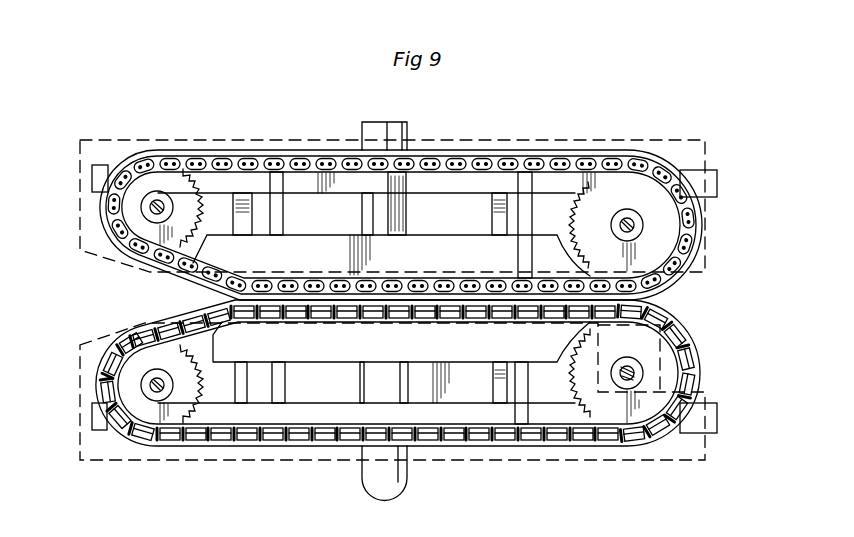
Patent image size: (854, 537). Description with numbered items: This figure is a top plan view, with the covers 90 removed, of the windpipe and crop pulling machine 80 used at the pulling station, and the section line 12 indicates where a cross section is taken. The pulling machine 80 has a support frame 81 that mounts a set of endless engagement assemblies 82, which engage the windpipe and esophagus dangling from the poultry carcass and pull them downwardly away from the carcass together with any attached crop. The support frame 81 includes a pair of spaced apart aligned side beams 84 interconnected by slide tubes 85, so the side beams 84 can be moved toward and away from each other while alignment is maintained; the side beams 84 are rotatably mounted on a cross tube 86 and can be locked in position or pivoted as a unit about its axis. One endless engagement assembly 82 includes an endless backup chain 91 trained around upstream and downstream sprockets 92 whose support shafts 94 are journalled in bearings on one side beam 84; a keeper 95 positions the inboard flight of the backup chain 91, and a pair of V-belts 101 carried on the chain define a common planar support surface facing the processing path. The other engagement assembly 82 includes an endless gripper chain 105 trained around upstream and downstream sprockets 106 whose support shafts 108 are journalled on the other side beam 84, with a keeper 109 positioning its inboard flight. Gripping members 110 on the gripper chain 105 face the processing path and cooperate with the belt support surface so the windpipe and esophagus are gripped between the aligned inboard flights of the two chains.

The section line 12 is at (230, 62).
The windpipe and crop pulling machine 80 is at (592, 114).
The support frame 81 is at (405, 126).
The endless engagement assemblies 82 is at (205, 152).
The side beams 84 is at (300, 180).
The slide tubes 85 is at (247, 230).
The cross tube 86 is at (406, 220).
The covers 90 is at (660, 136).
The backup chain 91 is at (100, 208).
The upstream and downstream sprockets 92 is at (148, 155).
The support shafts 94 is at (172, 192).
The keeper 95 is at (327, 240).
The V-belts 101 is at (248, 154).
The gripper chain 105 is at (165, 434).
The upstream and downstream sprockets 106 is at (655, 338).
The support shafts 108 is at (170, 368).
The keeper 109 is at (324, 362).
The gripping members 110 is at (373, 306).